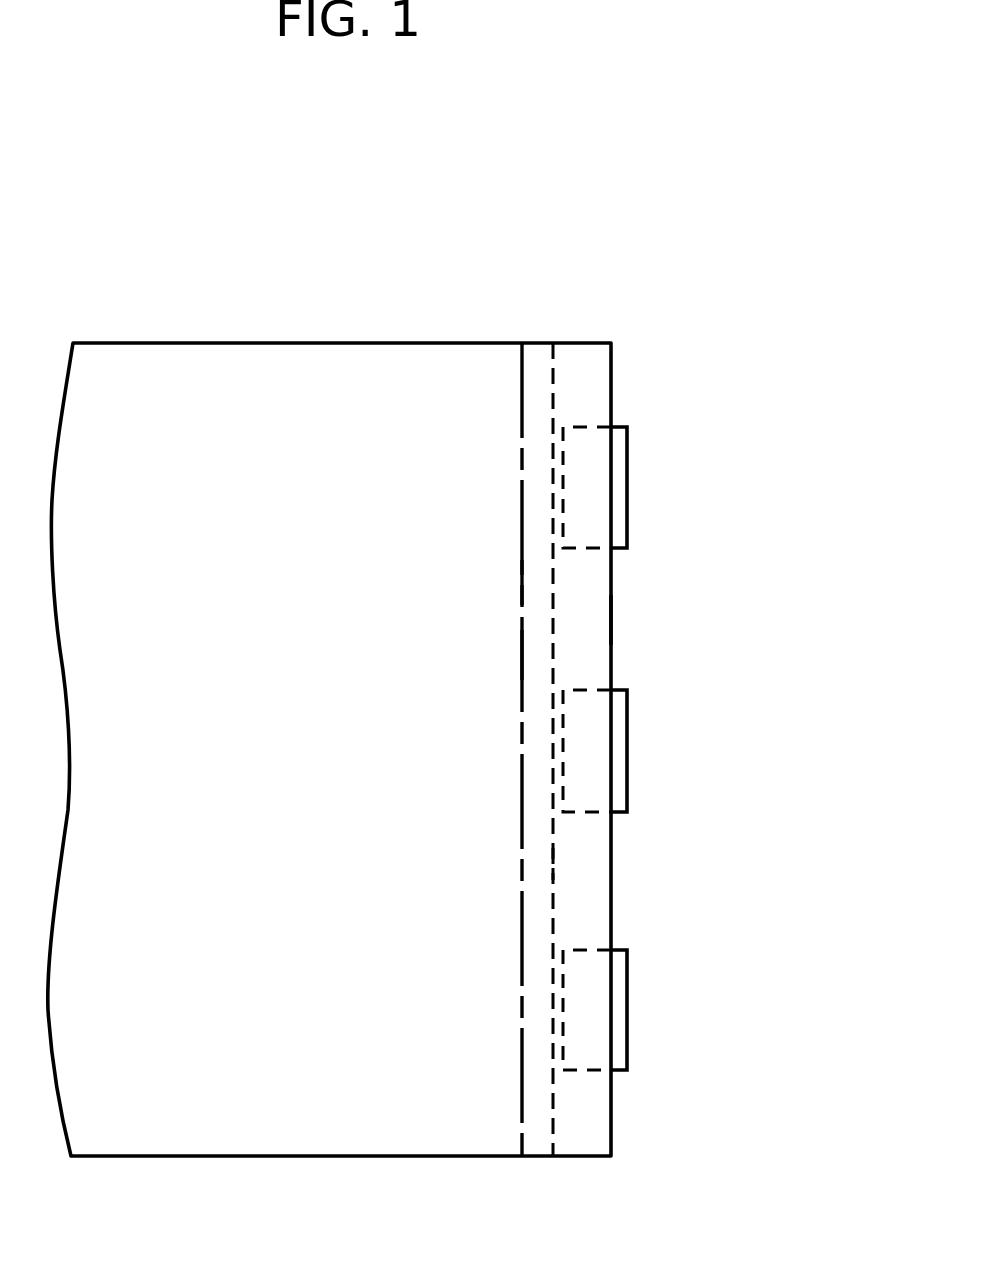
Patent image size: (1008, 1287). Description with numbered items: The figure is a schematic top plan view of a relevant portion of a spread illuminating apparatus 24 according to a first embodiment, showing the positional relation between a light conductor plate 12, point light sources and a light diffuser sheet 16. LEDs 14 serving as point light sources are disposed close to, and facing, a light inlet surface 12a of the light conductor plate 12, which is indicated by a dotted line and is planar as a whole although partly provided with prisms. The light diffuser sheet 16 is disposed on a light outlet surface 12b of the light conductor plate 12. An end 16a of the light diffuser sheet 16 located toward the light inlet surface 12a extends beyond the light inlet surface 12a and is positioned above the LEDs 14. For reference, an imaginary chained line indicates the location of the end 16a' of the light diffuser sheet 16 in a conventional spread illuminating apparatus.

The light conductor plate 12 is at (472, 1130).
The light inlet surface 12a is at (552, 863).
The light outlet surface 12b is at (533, 584).
The LED 14 is at (629, 482).
The light diffuser sheet 16 is at (303, 343).
The end of light diffuser sheet 16a is at (734, 606).
The end of light diffuser sheet of conventional apparatus 16a' is at (703, 665).
The spread illuminating apparatus 24 is at (523, 285).